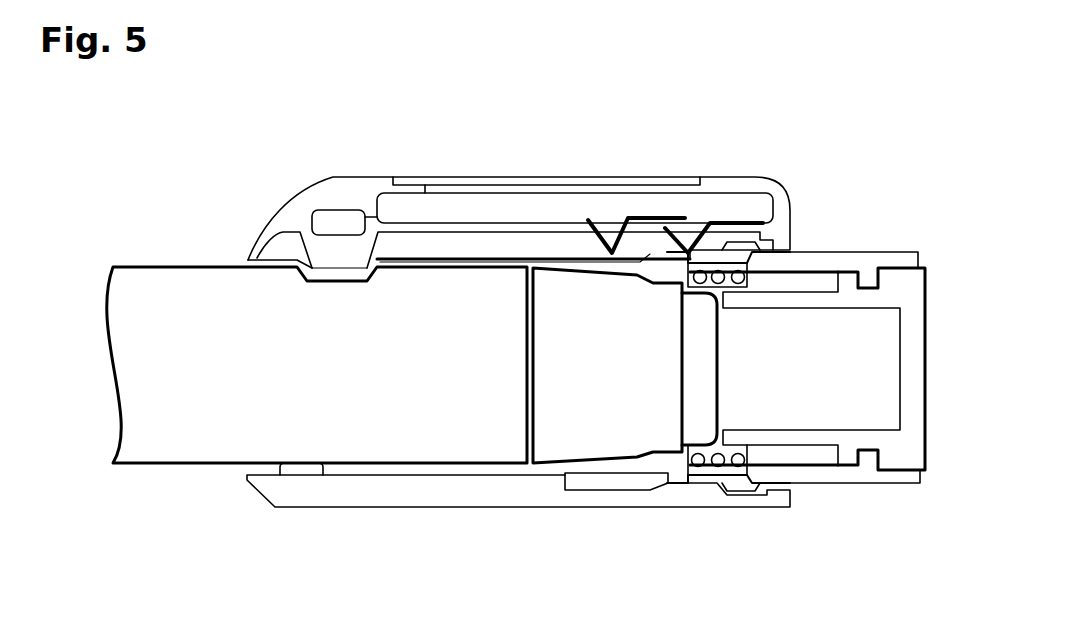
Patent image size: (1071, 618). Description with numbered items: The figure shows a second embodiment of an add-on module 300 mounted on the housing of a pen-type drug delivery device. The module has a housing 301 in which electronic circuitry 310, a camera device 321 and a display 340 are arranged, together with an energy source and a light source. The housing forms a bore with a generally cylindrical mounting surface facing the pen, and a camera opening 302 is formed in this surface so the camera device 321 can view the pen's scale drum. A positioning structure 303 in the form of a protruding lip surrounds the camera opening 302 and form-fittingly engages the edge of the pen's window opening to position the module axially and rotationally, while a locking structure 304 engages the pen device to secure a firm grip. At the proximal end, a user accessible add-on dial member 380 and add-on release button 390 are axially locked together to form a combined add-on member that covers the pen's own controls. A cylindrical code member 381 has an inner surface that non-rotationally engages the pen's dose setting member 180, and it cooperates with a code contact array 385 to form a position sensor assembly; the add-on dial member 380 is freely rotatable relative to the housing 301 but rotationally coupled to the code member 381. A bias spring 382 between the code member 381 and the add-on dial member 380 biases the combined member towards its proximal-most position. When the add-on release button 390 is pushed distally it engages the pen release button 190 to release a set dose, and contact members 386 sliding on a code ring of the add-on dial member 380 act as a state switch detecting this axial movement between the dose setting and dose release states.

The add-on module 300 is at (298, 190).
The housing 301 is at (283, 218).
The camera opening 302 is at (344, 270).
The positioning structure 303 is at (303, 278).
The locking structure 304 is at (308, 472).
The electronic circuitry 310 is at (465, 207).
The camera device 321 is at (320, 217).
The display 340 is at (540, 178).
The add-on dial member 380 is at (852, 260).
The cylindrical code member 381 is at (635, 477).
The bias spring 382 is at (738, 466).
The code contact array 385 is at (645, 225).
The contact members 386 is at (752, 222).
The add-on release button 390 is at (913, 280).
The dose setting member 180 is at (575, 445).
The release button 190 is at (697, 433).